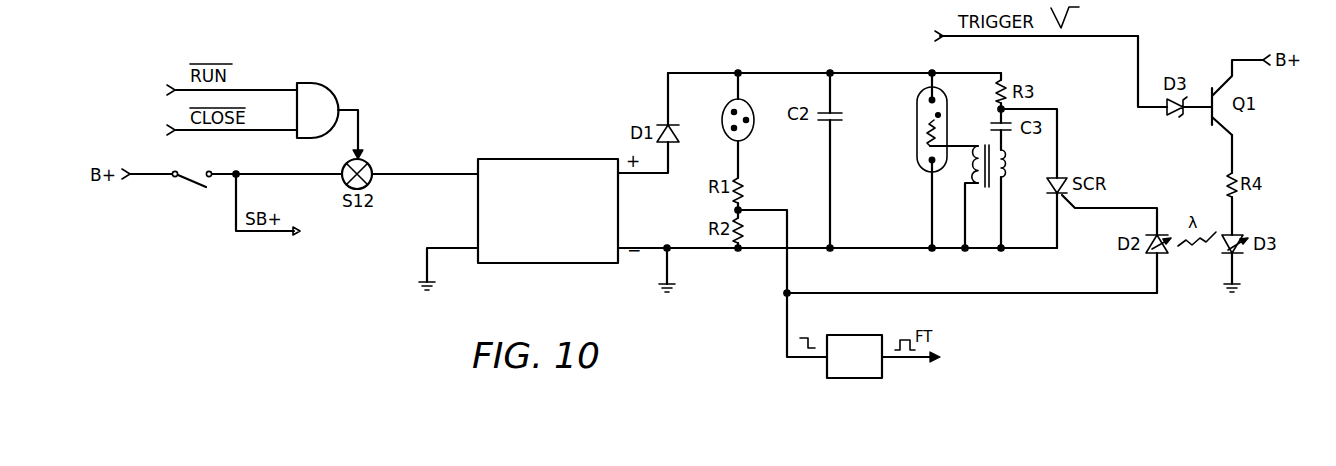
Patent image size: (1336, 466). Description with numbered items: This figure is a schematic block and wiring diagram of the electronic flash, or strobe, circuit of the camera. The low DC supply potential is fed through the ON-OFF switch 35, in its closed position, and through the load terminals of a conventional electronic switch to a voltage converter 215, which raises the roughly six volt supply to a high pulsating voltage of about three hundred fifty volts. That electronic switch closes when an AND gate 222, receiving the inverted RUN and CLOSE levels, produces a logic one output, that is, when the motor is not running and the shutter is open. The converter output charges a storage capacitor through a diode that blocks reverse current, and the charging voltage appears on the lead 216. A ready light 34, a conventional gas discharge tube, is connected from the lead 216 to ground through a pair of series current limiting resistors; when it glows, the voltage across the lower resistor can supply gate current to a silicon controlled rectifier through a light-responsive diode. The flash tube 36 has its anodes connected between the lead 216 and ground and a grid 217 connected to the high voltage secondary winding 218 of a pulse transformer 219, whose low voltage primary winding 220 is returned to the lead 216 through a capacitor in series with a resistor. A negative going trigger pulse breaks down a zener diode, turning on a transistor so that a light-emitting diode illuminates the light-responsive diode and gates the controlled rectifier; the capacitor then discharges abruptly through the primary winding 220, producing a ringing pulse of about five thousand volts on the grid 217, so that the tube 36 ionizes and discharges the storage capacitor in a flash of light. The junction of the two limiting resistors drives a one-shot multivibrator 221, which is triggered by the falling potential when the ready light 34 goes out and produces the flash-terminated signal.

The AND gate 222 is at (325, 93).
The ON-OFF switch 35 is at (197, 169).
The voltage converter 215 is at (535, 246).
The lead 216 is at (780, 70).
The ready light 34 is at (723, 110).
The light-emitting gas discharge tube 36 is at (917, 156).
The grid 217 is at (940, 127).
The high voltage secondary winding 218 is at (976, 158).
The pulse transformer 219 is at (991, 190).
The low voltage primary winding 220 is at (1006, 169).
The one-shot multivibrator 221 is at (858, 334).